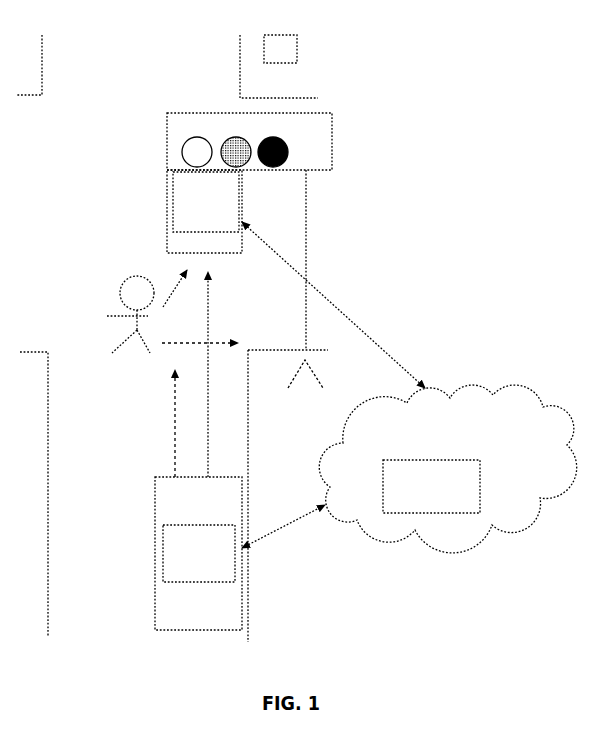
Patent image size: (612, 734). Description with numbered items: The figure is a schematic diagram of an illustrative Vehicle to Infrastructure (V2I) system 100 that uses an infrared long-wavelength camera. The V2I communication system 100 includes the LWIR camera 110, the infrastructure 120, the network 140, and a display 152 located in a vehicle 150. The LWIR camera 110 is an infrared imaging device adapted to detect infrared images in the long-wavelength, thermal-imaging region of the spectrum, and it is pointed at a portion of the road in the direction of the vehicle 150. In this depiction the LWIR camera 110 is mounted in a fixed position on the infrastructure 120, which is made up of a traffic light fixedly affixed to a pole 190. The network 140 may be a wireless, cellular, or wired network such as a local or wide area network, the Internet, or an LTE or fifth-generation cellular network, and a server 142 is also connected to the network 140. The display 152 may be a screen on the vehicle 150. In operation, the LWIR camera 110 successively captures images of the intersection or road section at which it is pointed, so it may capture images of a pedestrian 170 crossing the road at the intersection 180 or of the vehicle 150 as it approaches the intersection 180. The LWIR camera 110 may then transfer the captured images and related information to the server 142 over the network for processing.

The Vehicle to Infrastructure (V2I) system 100 is at (360, 163).
The LWIR camera 110 is at (206, 202).
The infrastructure 120 is at (249, 141).
The network 140 is at (447, 469).
The server 142 is at (431, 486).
The vehicle 150 is at (270, 557).
The display 152 is at (199, 553).
The pedestrian 170 is at (98, 293).
The intersection 180 is at (138, 178).
The pole 190 is at (306, 235).